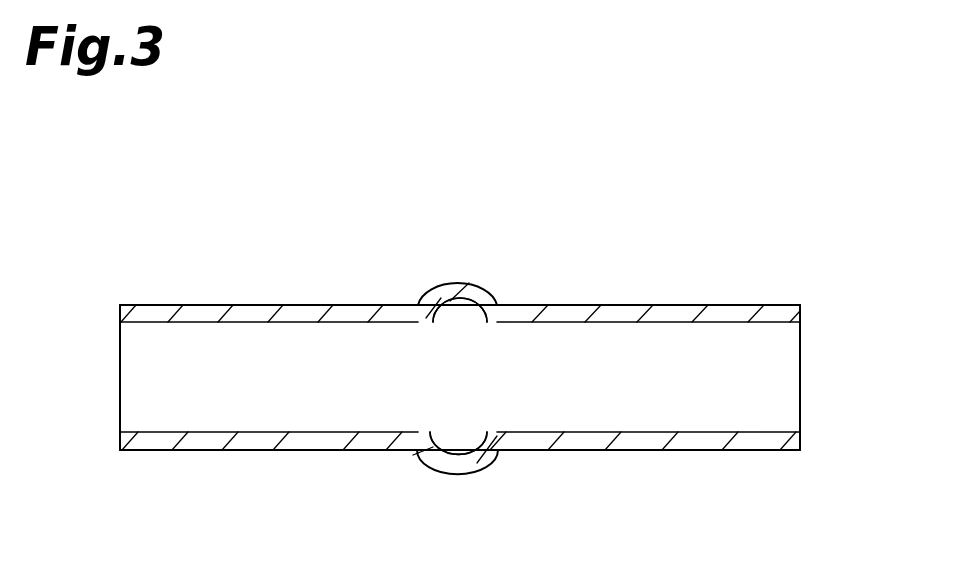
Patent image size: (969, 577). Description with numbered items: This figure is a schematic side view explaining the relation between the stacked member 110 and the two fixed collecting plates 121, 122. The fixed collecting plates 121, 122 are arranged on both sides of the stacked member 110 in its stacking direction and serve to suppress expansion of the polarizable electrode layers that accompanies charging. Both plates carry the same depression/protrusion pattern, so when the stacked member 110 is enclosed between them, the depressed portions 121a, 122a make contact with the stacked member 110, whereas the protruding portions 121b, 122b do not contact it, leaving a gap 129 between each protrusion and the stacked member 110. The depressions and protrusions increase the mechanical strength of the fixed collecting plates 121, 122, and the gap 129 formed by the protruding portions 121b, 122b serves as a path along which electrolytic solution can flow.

The stacked member 110 is at (782, 391).
The fixed collecting plate 121 is at (752, 305).
The depressed portion 121a is at (678, 312).
The protruding portion 121b is at (480, 295).
The fixed collecting plate 122 is at (762, 450).
The depressed portion 122a is at (660, 445).
The protruding portion 122b is at (462, 463).
The gap 129 is at (457, 313).